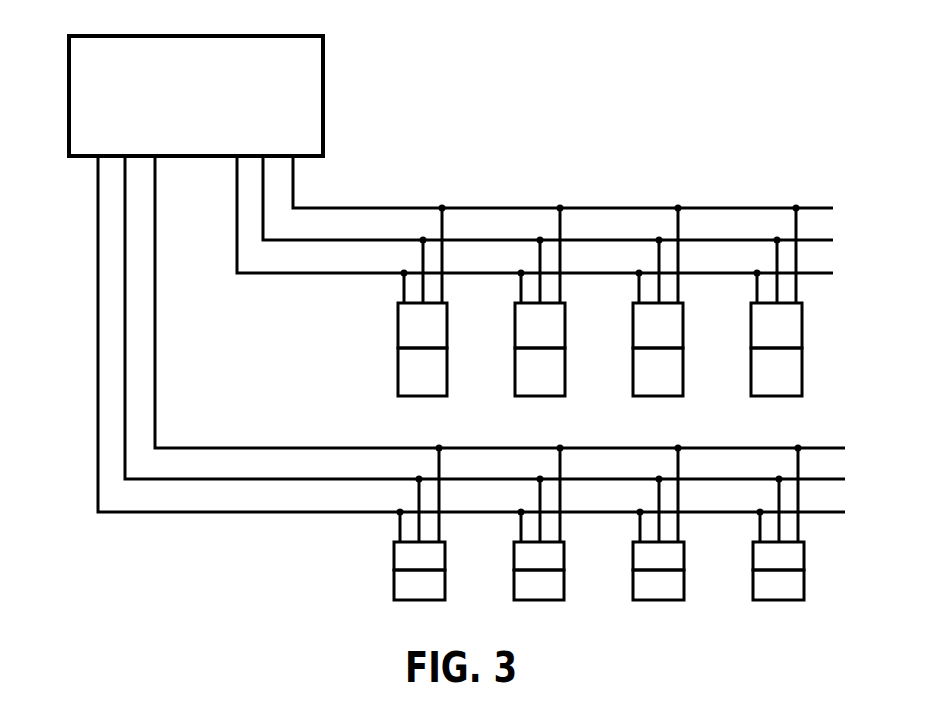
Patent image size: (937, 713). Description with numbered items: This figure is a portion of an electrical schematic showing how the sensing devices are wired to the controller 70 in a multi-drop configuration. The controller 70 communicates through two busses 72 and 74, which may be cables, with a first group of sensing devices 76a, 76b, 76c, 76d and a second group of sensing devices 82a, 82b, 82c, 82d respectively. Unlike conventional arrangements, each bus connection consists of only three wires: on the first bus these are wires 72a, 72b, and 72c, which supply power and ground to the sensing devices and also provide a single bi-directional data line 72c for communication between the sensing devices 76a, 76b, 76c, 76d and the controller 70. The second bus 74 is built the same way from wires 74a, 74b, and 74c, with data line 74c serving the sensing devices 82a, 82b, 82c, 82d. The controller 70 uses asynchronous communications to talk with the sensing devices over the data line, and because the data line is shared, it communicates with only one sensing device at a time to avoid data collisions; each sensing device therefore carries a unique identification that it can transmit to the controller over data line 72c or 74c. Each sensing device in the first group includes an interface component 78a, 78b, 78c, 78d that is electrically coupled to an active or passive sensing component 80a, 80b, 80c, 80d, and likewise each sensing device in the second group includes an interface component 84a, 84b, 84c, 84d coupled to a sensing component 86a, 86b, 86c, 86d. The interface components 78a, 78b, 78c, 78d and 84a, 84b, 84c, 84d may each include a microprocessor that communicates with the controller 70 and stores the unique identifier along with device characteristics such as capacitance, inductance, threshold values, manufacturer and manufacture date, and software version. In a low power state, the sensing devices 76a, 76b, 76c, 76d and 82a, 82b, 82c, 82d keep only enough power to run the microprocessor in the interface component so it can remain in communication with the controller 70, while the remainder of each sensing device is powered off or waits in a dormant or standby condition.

The controller 70 is at (125, 36).
The bus 72 is at (431, 336).
The wire 72a is at (98, 250).
The wire 72b is at (125, 290).
The data line 72c is at (155, 360).
The bus 74 is at (503, 210).
The wire 74a is at (237, 194).
The wire 74b is at (263, 220).
The data line 74c is at (293, 172).
The sensing device 76a is at (390, 539).
The sensing device 76b is at (511, 539).
The sensing device 76c is at (628, 539).
The sensing device 76d is at (748, 539).
The interface component 78a is at (394, 560).
The interface component 78b is at (514, 560).
The interface component 78c is at (633, 560).
The interface component 78d is at (753, 560).
The sensing component 80a is at (394, 592).
The sensing component 80b is at (514, 592).
The sensing component 80c is at (633, 592).
The sensing component 80d is at (753, 592).
The sensing device 82a is at (391, 316).
The sensing device 82b is at (508, 316).
The sensing device 82c is at (626, 316).
The sensing device 82d is at (746, 316).
The interface component 84a is at (398, 322).
The interface component 84b is at (515, 324).
The interface component 84c is at (633, 324).
The interface component 84d is at (751, 322).
The sensing component 86a is at (398, 375).
The sensing component 86b is at (515, 383).
The sensing component 86c is at (633, 382).
The sensing component 86d is at (751, 380).